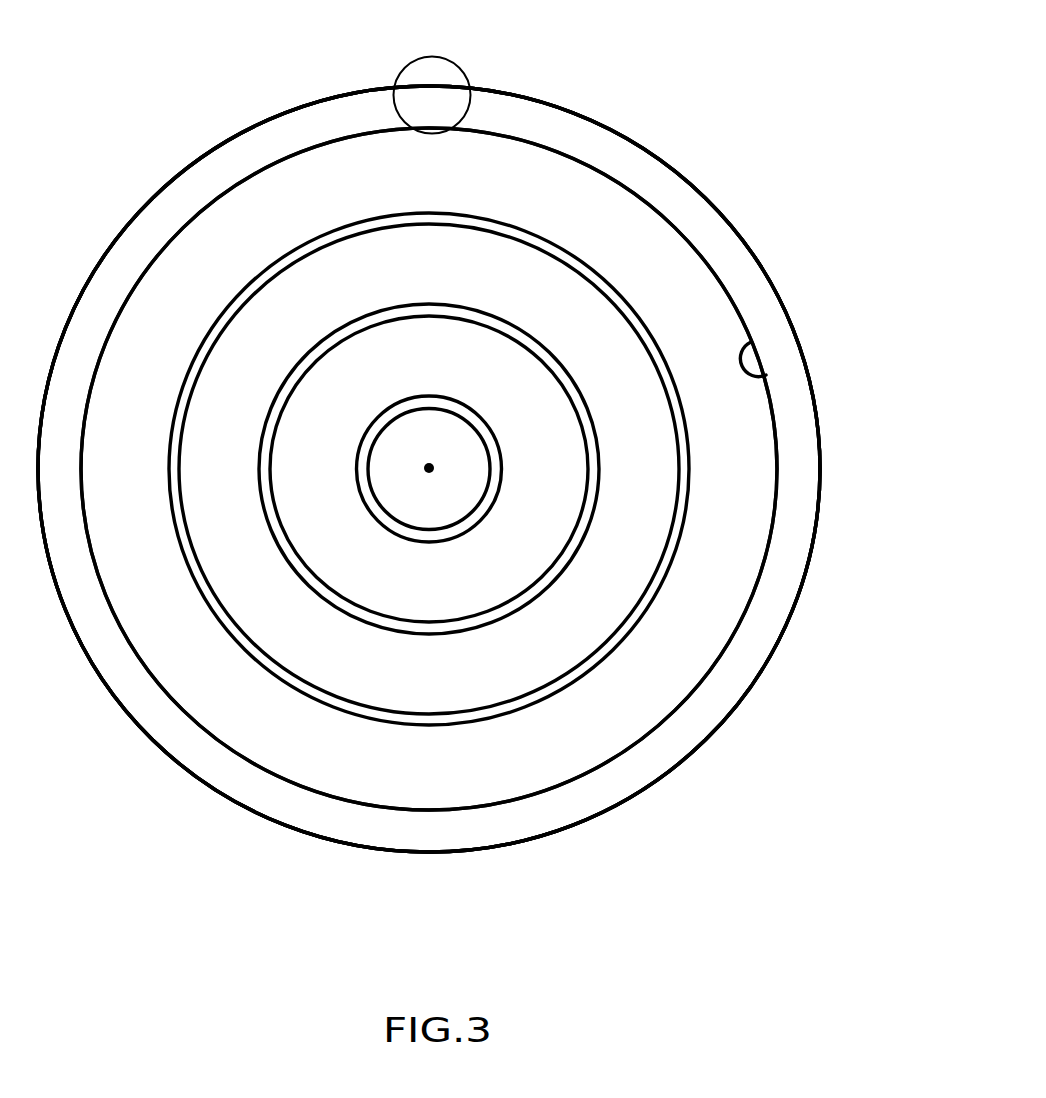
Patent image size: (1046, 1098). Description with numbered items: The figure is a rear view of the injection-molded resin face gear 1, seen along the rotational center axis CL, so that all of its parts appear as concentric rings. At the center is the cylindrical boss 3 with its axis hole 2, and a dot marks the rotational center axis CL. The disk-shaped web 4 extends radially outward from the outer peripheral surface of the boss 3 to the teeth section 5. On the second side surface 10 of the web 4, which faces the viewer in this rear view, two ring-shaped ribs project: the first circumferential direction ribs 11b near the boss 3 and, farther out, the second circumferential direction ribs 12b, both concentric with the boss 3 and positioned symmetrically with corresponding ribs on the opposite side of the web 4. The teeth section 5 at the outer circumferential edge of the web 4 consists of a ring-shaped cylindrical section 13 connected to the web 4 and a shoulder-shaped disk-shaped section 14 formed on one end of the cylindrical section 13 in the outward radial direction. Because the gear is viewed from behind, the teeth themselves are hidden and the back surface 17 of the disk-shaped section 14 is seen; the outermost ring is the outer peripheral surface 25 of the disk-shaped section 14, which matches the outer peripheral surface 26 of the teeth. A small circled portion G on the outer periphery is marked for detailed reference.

The injection-molded resin face gear 1 is at (677, 164).
The teeth section 5 is at (737, 232).
The outer peripheral surface of the disk-shaped section 25 is at (519, 92).
The outer peripheral surface of the teeth 26 is at (429, 469).
The disk-shaped section 14 is at (570, 130).
The back surface 17 is at (429, 469).
The second side surface 10 is at (695, 320).
The cylindrical section 13 is at (765, 376).
The second circumferential direction ribs 12b is at (585, 263).
The first circumferential direction ribs 11b is at (538, 342).
The web 4 is at (383, 595).
The boss 3 is at (463, 413).
The axis hole 2 is at (368, 470).
The rotational center axis CL is at (434, 469).
The portion G is at (395, 78).